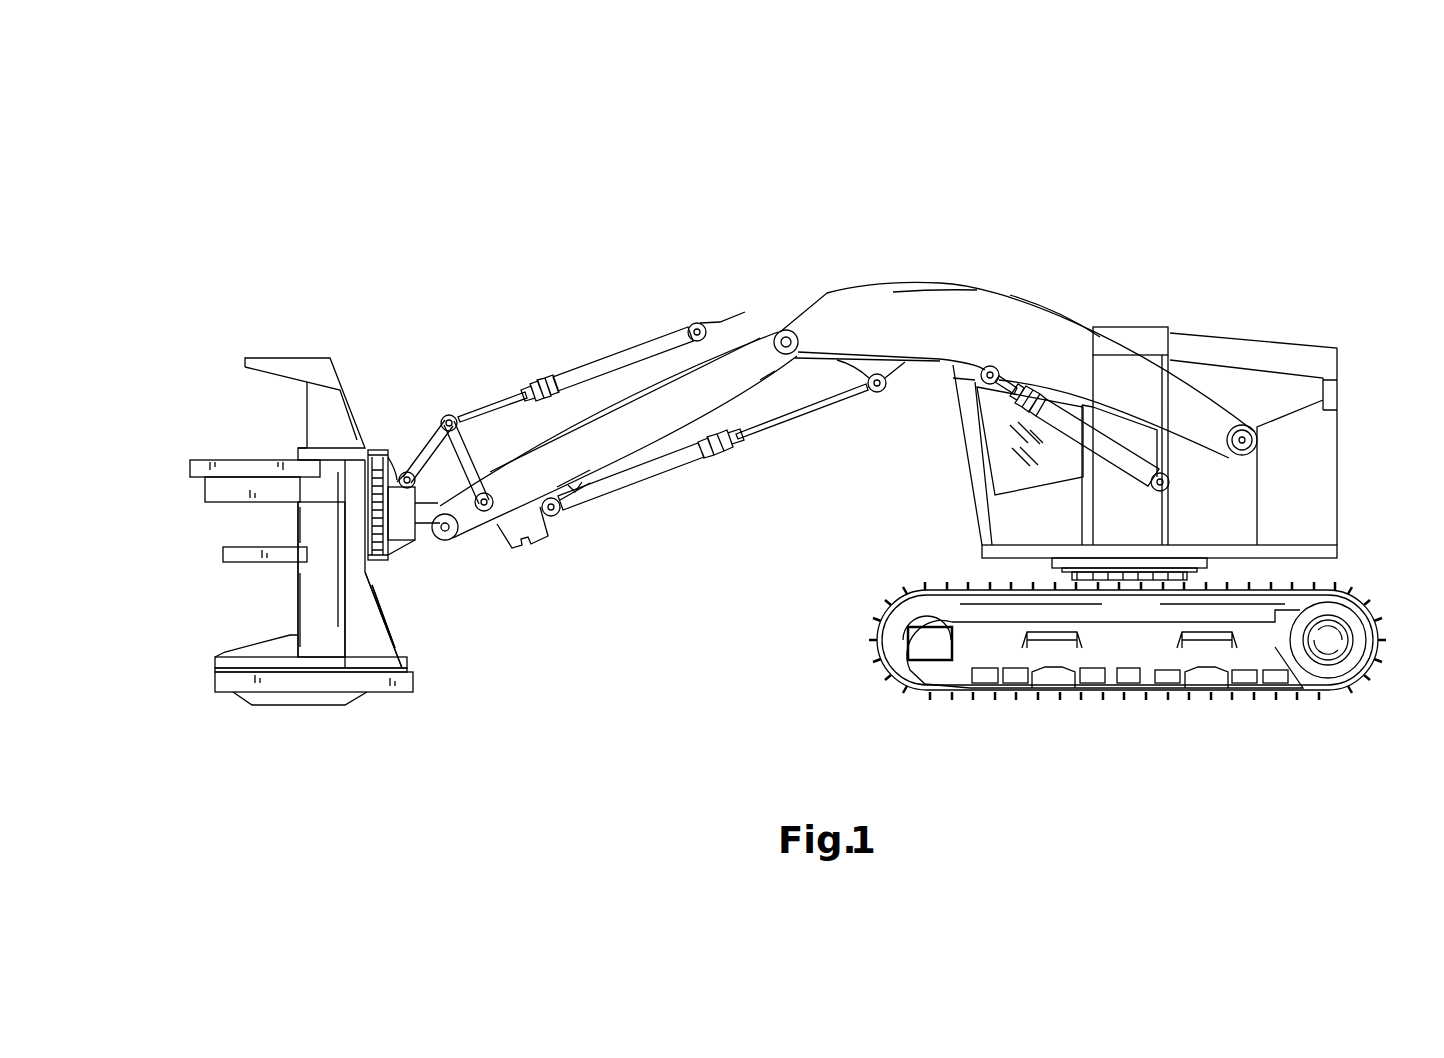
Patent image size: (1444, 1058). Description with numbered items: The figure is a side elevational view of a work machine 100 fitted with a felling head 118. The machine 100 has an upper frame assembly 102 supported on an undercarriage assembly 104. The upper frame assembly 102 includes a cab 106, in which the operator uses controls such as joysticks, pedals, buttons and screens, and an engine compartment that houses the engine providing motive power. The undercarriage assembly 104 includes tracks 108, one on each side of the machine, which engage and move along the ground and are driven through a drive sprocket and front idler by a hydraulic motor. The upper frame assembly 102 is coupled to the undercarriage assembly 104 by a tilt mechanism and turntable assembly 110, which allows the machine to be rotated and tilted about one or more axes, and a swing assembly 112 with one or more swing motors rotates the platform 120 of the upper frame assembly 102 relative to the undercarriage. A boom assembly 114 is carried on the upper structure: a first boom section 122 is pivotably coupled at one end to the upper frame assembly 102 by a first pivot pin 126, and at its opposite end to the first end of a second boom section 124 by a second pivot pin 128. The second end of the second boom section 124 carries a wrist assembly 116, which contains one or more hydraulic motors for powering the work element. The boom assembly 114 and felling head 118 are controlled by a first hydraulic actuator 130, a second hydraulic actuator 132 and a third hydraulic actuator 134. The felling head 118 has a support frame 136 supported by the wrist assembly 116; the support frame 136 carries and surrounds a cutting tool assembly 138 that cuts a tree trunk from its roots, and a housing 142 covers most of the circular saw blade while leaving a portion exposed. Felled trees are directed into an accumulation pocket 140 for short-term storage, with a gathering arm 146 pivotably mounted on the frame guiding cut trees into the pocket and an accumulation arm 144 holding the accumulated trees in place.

The machine 100 is at (1122, 162).
The upper frame assembly 102 is at (1347, 420).
The undercarriage assembly 104 is at (1140, 712).
The cab 106 is at (1005, 412).
The tracks 108 is at (868, 650).
The tilt mechanism and turntable assembly 110 is at (1060, 575).
The swing assembly 112 is at (1210, 563).
The boom assembly 114 is at (888, 282).
The wrist assembly 116 is at (408, 556).
The felling head 118 is at (352, 408).
The platform 120 is at (1310, 548).
The first boom section 122 is at (1000, 310).
The second boom section 124 is at (676, 382).
The first pivot pin 126 is at (1242, 428).
The second pivot pin 128 is at (788, 328).
The first hydraulic actuator 130 is at (1060, 415).
The second hydraulic actuator 132 is at (752, 437).
The third hydraulic actuator 134 is at (566, 368).
The support frame 136 is at (380, 644).
The cutting tool assembly 138 is at (290, 601).
The accumulation pocket 140 is at (247, 640).
The housing 142 is at (372, 683).
The accumulation arm 144 is at (222, 550).
The gathering arm 146 is at (228, 458).